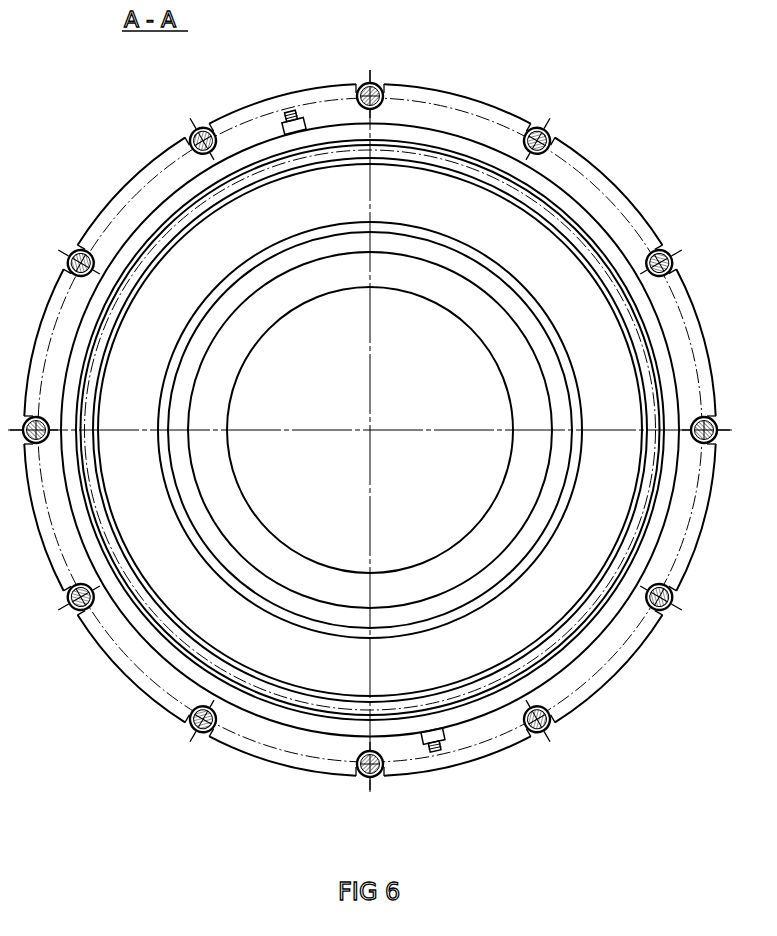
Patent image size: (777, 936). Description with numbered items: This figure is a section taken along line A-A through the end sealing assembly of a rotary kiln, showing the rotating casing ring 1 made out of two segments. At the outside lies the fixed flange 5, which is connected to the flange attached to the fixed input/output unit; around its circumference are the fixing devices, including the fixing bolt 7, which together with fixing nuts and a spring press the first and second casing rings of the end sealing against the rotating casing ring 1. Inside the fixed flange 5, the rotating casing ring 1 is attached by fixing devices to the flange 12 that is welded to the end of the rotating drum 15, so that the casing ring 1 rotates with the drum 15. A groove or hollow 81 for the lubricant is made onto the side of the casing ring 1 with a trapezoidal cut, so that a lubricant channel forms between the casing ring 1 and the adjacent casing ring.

The rotating casing ring 1 is at (430, 190).
The fixed flange 5 is at (163, 183).
The fixing bolt 7 is at (193, 137).
The groove or hollow for the lubricant 81 is at (558, 207).
The flange attached to the rotating drum 12 is at (552, 525).
The rotating drum 15 is at (512, 547).